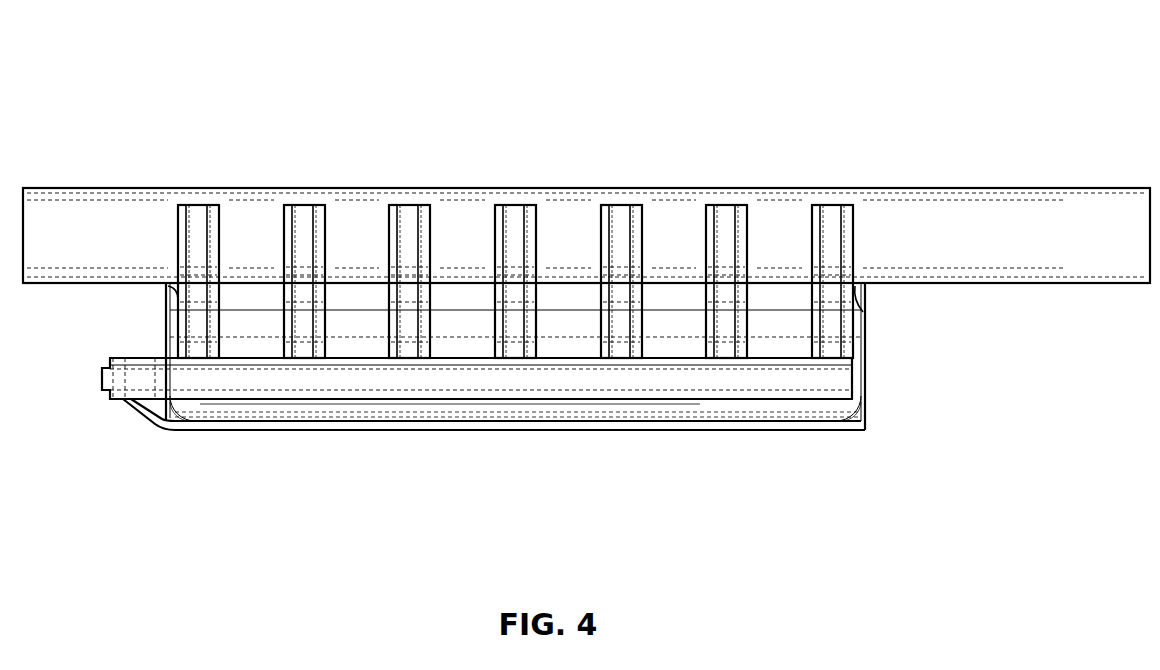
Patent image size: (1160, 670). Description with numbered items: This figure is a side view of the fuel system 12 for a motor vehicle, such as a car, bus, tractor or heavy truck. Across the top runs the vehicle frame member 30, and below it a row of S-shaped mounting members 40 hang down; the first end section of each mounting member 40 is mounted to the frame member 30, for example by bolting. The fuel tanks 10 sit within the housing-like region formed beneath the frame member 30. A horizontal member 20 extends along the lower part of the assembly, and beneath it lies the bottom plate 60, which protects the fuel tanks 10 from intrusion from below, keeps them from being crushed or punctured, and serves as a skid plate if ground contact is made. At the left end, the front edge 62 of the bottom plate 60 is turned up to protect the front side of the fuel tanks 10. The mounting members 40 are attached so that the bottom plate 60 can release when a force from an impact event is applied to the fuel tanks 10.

The fuel system 12 is at (586, 264).
The frame member 30 is at (785, 187).
The mounting member 40 is at (303, 199).
The fuel tank 10 is at (157, 311).
The guide rail 20 is at (807, 399).
The bottom plate 60 is at (477, 458).
The front edge 62 is at (138, 417).